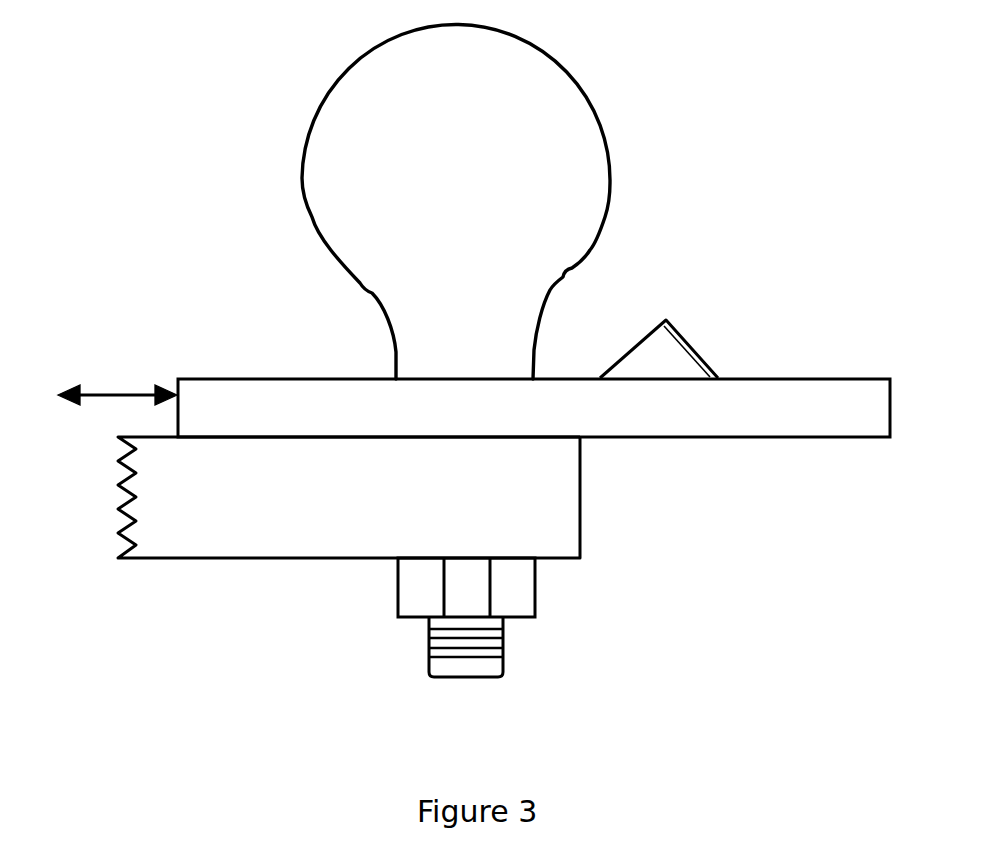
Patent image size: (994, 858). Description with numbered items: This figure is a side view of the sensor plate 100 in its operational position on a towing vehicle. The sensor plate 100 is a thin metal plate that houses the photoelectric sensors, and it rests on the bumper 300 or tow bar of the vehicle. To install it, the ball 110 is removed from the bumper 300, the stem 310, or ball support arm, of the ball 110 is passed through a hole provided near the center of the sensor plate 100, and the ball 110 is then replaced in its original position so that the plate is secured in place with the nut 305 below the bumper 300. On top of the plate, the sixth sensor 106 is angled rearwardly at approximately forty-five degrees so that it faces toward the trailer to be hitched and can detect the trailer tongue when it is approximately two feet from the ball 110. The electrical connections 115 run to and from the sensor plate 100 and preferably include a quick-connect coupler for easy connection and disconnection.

The sensor plate 100 is at (812, 423).
The sixth sensor 106 is at (657, 348).
The ball 110 is at (479, 126).
The electrical connections 115 is at (129, 392).
The bumper 300 is at (280, 510).
The nut 305 is at (505, 588).
The stem 310 is at (445, 662).